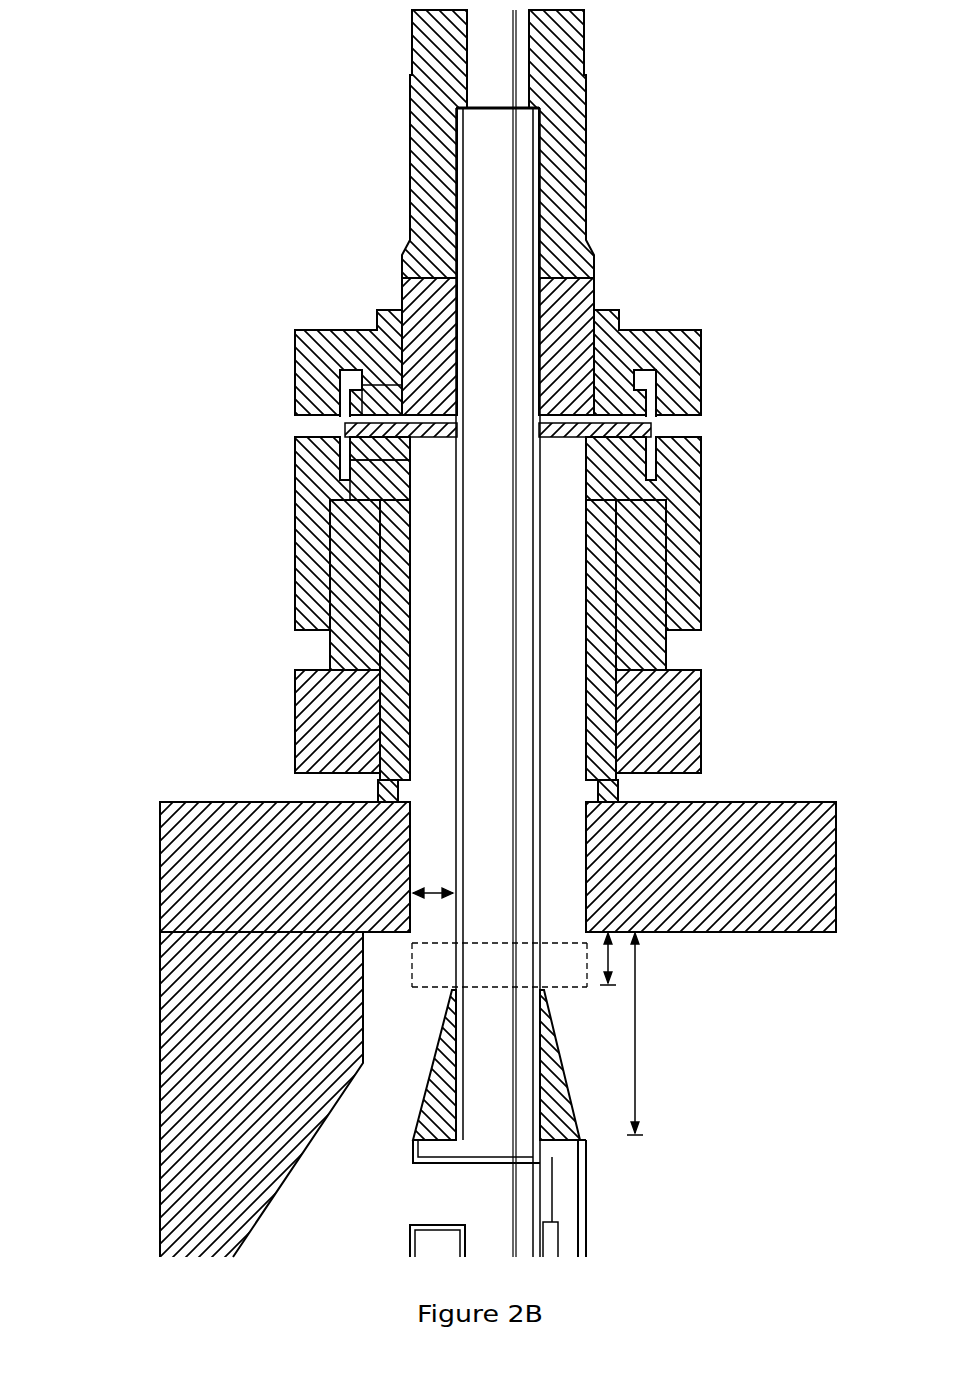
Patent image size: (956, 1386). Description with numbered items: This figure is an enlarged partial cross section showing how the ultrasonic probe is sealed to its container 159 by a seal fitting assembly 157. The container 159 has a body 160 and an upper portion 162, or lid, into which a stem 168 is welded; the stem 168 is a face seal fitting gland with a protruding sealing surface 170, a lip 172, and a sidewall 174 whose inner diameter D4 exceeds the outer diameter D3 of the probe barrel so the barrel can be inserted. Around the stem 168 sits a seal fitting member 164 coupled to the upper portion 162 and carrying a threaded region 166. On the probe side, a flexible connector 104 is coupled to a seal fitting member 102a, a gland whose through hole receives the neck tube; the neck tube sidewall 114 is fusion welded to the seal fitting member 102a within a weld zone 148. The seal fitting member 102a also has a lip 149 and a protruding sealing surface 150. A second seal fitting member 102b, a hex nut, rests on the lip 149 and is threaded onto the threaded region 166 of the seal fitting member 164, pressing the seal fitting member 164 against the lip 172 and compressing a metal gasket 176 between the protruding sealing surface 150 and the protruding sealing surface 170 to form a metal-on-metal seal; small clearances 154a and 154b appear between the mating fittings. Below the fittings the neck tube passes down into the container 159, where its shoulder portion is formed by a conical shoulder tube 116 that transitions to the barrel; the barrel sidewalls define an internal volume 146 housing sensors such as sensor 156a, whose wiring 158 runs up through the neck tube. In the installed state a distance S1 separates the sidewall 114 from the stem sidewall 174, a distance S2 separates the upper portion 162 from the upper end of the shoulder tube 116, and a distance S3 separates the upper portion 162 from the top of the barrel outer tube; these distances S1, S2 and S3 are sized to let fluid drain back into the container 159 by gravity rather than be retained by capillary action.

The flexible connector 104 is at (570, 127).
The seal fitting member 102a is at (596, 284).
The seal fitting member 102b is at (703, 335).
The lip 149 is at (365, 355).
The weld zone 148 is at (452, 398).
The first gap 154a is at (302, 420).
The second gap 154b is at (690, 424).
The metal gasket 176 is at (588, 427).
The protruding sealing surface 150 is at (395, 422).
The protruding sealing surface 170 is at (390, 442).
The lip 172 is at (380, 500).
The threaded region 166 is at (335, 540).
The seal fitting member 164 is at (303, 698).
The sidewall 114 is at (468, 583).
The stem 168 is at (407, 650).
The sidewall 174 is at (407, 758).
The seal fitting assembly 157 is at (514, 540).
The container 159 is at (426, 986).
The upper portion 162 is at (178, 857).
The body 160 is at (190, 1050).
The shoulder tube 116 is at (420, 1108).
The wiring 158 is at (550, 1213).
The internal volume 146 is at (565, 1188).
The sensor 156a is at (553, 1240).
The distance S1 is at (427, 897).
The distance S2 is at (620, 958).
The distance S3 is at (637, 1038).
The outer diameter D3 is at (497, 990).
The inner diameter D4 is at (450, 943).